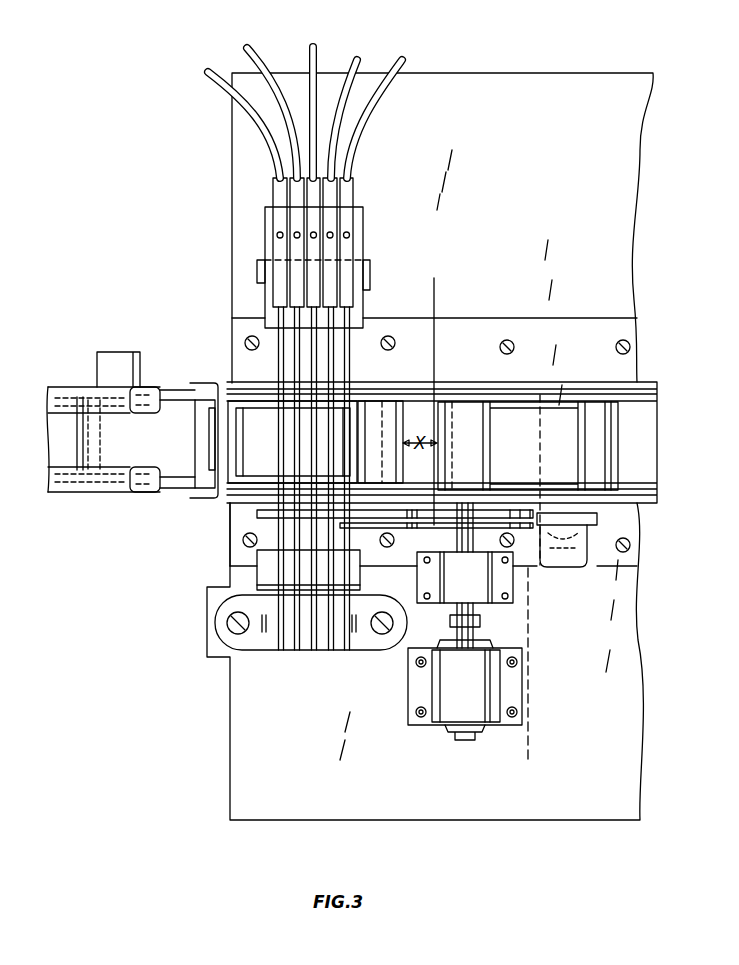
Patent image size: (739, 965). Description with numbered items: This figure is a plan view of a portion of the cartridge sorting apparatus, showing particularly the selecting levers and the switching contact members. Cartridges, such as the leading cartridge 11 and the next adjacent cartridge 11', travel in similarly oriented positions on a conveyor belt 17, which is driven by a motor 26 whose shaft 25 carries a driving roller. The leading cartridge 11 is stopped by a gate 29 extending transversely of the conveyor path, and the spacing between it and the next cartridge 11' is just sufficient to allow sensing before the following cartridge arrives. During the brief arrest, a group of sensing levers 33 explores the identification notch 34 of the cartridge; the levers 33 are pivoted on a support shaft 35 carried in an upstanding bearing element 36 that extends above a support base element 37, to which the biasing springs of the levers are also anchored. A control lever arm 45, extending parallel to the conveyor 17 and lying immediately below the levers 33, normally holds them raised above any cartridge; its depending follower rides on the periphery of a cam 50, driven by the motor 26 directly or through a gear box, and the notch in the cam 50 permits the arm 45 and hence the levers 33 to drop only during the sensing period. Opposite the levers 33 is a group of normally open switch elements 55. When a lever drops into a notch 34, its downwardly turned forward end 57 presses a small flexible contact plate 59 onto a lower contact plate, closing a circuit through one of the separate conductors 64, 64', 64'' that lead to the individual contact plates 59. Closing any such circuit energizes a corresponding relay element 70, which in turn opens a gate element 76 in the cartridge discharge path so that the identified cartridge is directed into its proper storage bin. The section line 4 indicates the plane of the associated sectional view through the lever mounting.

The section line 4- 4 is at (434, 297).
The cartridge 11 is at (301, 413).
The next adjacent cartridge 11' is at (528, 461).
The conveyor belt 17 is at (626, 400).
The shaft 25 is at (480, 634).
The motor 26 is at (498, 692).
The gate 29 is at (200, 383).
The sensing levers 33 is at (338, 372).
The identification notch 34 is at (522, 486).
The support shaft 35 is at (262, 632).
The bearing element 36 is at (216, 615).
The support base element 37 is at (240, 320).
The control lever arm 45 is at (257, 514).
The cam 50 is at (490, 607).
The switch elements 55 is at (412, 203).
The forward end of lever 57 is at (352, 330).
The flexible contact plate 59 is at (264, 272).
The conductor line 64 is at (393, 112).
The conductor line 64' is at (353, 104).
The conductor line 64'' is at (260, 106).
The relay element 70 is at (98, 360).
The gate element side member 76 is at (124, 446).